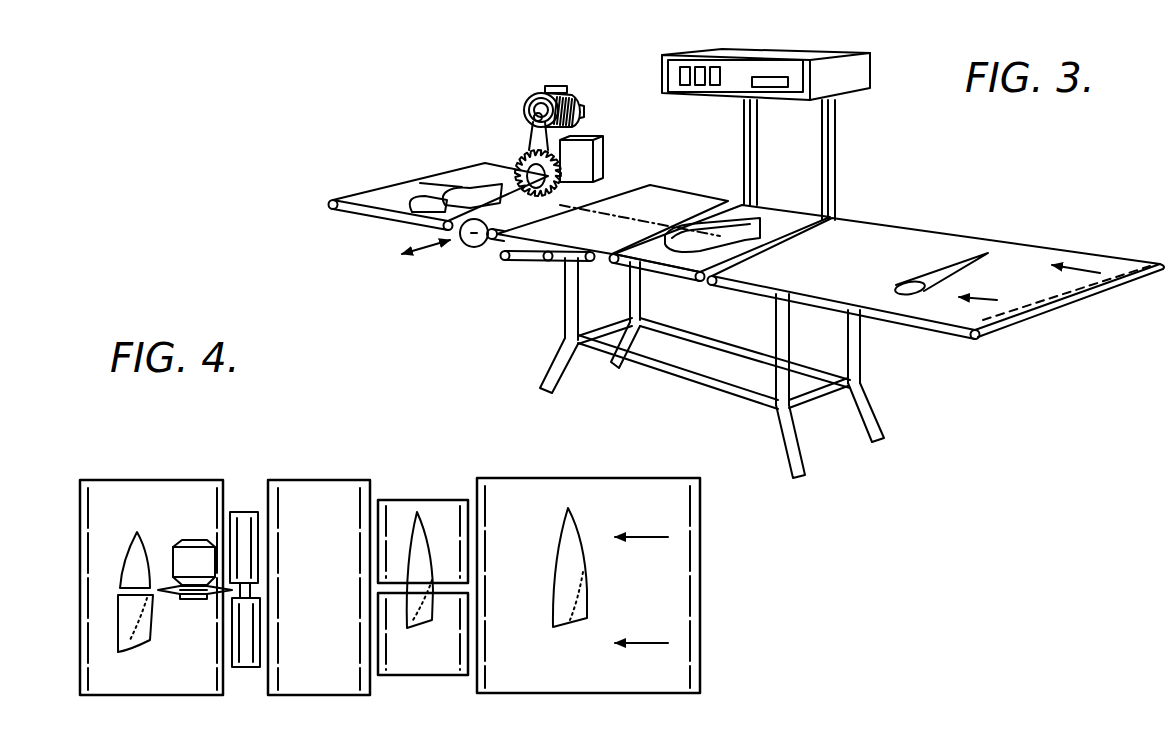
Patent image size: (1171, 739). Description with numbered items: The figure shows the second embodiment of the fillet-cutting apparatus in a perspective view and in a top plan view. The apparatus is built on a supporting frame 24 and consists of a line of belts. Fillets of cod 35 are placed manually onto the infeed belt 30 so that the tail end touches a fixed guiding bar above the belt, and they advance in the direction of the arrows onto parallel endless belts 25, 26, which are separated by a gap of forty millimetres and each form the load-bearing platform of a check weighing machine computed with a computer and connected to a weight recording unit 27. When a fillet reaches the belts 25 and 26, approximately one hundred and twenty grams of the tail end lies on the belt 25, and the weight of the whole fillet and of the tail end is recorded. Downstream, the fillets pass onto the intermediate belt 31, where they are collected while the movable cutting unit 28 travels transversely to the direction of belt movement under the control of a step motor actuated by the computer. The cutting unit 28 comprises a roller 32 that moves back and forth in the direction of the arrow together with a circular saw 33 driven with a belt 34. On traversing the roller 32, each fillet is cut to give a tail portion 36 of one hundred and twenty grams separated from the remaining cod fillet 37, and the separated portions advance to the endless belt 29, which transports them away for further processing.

In FIG. 3, the supporting frame 24 is at (563, 316).
In FIG. 3, the endless belt 25 is at (775, 217).
In FIG. 4, the endless belt 25 is at (442, 510).
In FIG. 3, the endless belt 26 is at (690, 262).
In FIG. 4, the endless belt 26 is at (430, 668).
In FIG. 3, the weight recording unit 27 is at (766, 70).
In FIG. 3, the movable cutting unit 28 is at (557, 83).
In FIG. 4, the movable cutting unit 28 is at (193, 535).
In FIG. 3, the endless belt 29 is at (462, 167).
In FIG. 4, the endless belt 29 is at (113, 497).
In FIG. 3, the infeed belt 30 is at (1042, 250).
In FIG. 4, the infeed belt 30 is at (537, 508).
In FIG. 3, the intermediate belt 31 is at (675, 200).
In FIG. 4, the intermediate belt 31 is at (318, 490).
In FIG. 3, the roller 32 is at (468, 247).
In FIG. 4, the roller 32 is at (238, 525).
In FIG. 3, the circular saw 33 is at (522, 158).
In FIG. 4, the circular saw 33 is at (217, 597).
In FIG. 3, the belt 34 is at (530, 135).
In FIG. 3, the fillets of cod 35 is at (935, 278).
In FIG. 4, the fillets of cod 35 is at (567, 532).
In FIG. 3, the tail portions 36 is at (440, 197).
In FIG. 4, the tail portions 36 is at (130, 573).
In FIG. 3, the remaining cod fillet 37 is at (415, 195).
In FIG. 4, the remaining cod fillet 37 is at (120, 635).